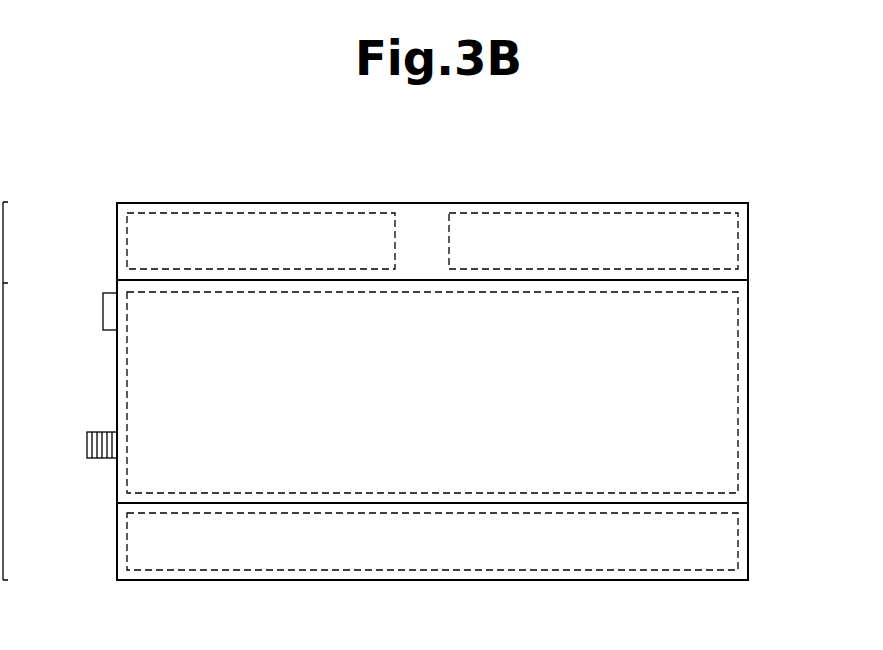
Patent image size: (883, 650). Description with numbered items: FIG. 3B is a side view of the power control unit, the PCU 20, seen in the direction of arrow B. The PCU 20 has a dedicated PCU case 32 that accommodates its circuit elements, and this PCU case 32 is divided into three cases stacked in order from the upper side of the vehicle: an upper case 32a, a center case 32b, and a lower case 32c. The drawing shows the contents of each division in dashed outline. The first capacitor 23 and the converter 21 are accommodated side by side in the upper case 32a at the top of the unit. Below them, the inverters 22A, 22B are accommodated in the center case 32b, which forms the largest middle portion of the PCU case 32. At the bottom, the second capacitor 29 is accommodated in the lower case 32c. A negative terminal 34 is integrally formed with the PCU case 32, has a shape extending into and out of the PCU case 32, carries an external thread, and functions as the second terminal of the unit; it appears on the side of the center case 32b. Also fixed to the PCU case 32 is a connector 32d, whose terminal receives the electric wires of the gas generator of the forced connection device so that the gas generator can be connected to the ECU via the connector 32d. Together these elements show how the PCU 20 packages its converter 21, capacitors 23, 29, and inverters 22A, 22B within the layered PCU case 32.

The PCU 20 is at (748, 139).
The converter 21 is at (596, 212).
The first capacitor 23 is at (263, 212).
The second capacitor 29 is at (432, 572).
The PCU case 32 is at (822, 340).
The upper case 32a is at (748, 253).
The center case 32b is at (748, 387).
The lower case 32c is at (748, 523).
The connector 32d is at (104, 312).
The negative terminal 34 is at (87, 445).
The inverter 22A is at (59, 391).
The inverter 22B is at (8, 362).